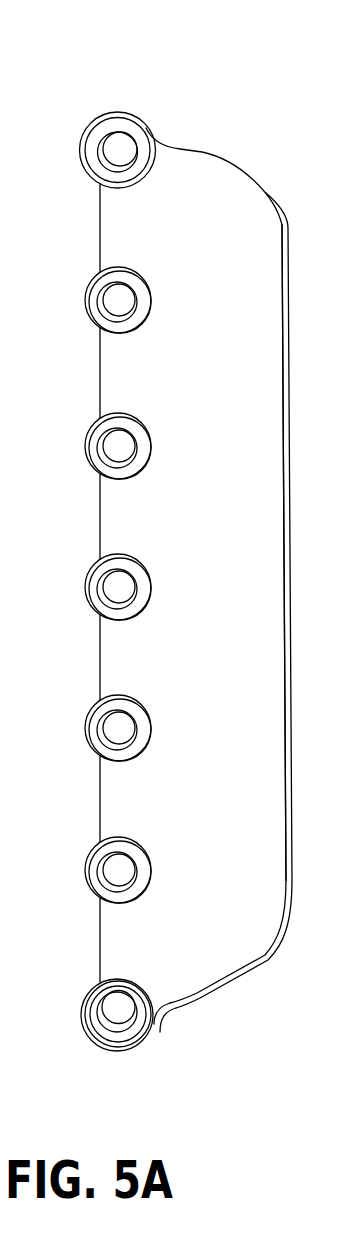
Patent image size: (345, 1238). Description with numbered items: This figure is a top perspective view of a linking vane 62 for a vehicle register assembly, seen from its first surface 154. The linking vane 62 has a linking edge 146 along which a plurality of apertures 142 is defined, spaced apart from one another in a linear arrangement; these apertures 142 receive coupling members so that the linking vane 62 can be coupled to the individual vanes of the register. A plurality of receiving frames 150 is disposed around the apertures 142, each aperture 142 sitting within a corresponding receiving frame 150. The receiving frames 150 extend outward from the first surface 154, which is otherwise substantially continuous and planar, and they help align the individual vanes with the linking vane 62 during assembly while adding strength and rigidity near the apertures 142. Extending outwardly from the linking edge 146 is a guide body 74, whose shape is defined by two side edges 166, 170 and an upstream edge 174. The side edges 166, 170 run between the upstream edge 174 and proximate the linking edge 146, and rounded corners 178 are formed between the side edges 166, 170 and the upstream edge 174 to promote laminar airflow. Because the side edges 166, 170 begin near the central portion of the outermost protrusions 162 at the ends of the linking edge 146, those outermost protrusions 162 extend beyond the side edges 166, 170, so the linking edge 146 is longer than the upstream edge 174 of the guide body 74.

The linking vane 62 is at (177, 586).
The guide body 74 is at (212, 733).
The plurality of apertures 142 is at (133, 140).
The linking edge 146 is at (98, 540).
The plurality of receiving frames 150 is at (83, 318).
The first surface 154 is at (197, 957).
The outermost protrusions 162 is at (100, 584).
The side edge 166 is at (203, 150).
The side edge 170 is at (180, 1007).
The upstream edge 174 is at (292, 640).
The rounded corners 178 is at (282, 222).